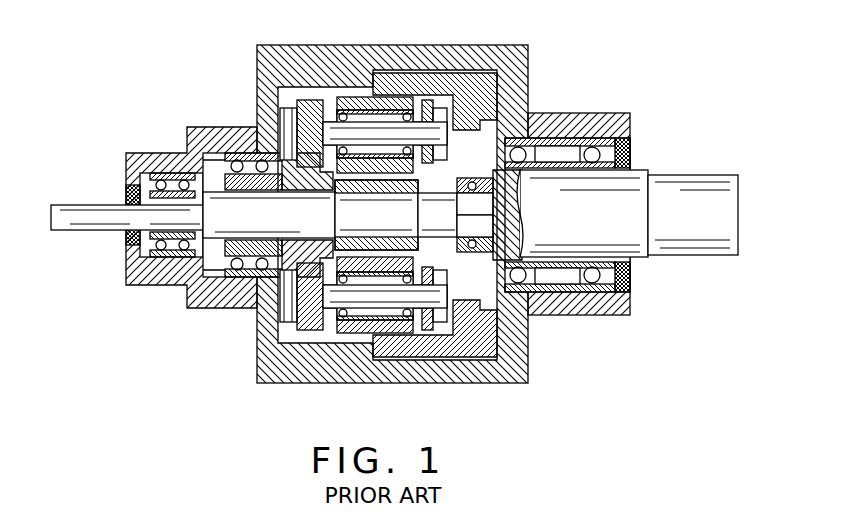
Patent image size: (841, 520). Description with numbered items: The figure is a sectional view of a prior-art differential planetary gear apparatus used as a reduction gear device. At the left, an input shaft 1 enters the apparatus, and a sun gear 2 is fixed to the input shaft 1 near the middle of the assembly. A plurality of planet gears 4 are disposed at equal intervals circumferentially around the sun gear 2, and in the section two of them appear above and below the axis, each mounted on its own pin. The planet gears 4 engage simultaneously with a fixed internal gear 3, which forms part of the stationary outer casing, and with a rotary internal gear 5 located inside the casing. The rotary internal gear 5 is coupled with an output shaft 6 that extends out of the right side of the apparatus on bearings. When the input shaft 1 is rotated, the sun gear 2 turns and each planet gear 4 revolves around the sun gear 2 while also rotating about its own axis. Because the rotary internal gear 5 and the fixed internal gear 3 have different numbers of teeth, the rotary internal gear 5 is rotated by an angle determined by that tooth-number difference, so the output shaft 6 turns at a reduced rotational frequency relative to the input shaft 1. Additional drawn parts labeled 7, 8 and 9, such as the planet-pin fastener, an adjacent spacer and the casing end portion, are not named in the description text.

The input shaft 1 is at (90, 218).
The sun gear 2 is at (343, 202).
The fixed internal gear 3 is at (353, 343).
The planet gears 4 is at (370, 97).
The rotary internal gear 5 is at (420, 347).
The output shaft 6 is at (688, 250).
The planet bolt 7 is at (307, 333).
The spacer 8 is at (437, 325).
The end cover 9 is at (262, 373).